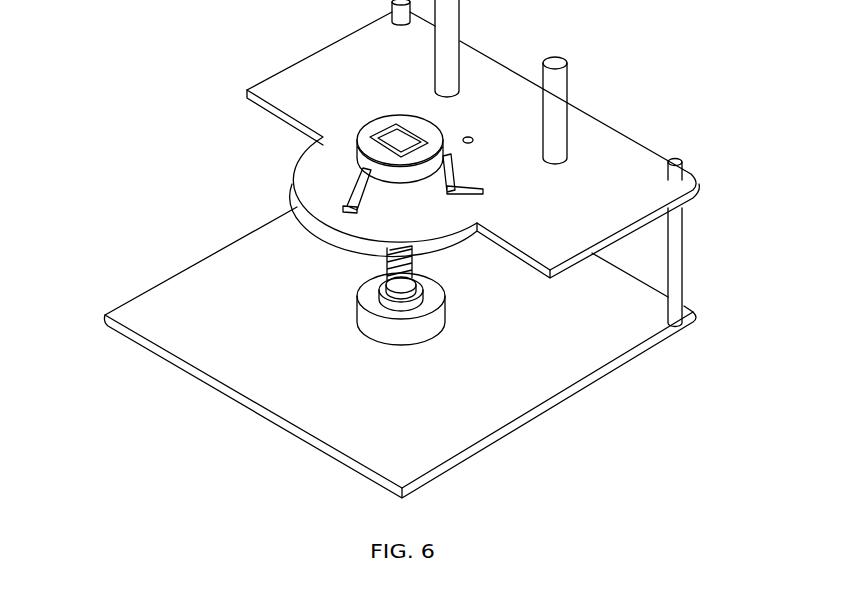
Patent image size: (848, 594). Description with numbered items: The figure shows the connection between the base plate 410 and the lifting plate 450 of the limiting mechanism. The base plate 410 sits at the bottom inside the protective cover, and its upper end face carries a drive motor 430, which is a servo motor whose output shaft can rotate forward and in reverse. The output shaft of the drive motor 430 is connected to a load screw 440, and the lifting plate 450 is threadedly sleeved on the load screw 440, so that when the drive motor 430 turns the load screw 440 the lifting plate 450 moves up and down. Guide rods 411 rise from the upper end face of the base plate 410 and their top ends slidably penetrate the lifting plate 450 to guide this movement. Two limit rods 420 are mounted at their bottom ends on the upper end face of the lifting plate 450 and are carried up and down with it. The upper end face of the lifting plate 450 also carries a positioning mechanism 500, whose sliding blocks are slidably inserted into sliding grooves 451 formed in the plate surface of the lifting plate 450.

The positioning mechanism 500 is at (378, 117).
The sliding grooves 451 is at (343, 207).
The load screw 440 is at (380, 272).
The drive motor 430 is at (393, 325).
The limit rods 420 is at (557, 132).
The lifting plate 450 is at (620, 208).
The guide rods 411 is at (673, 277).
The base plate 410 is at (622, 334).